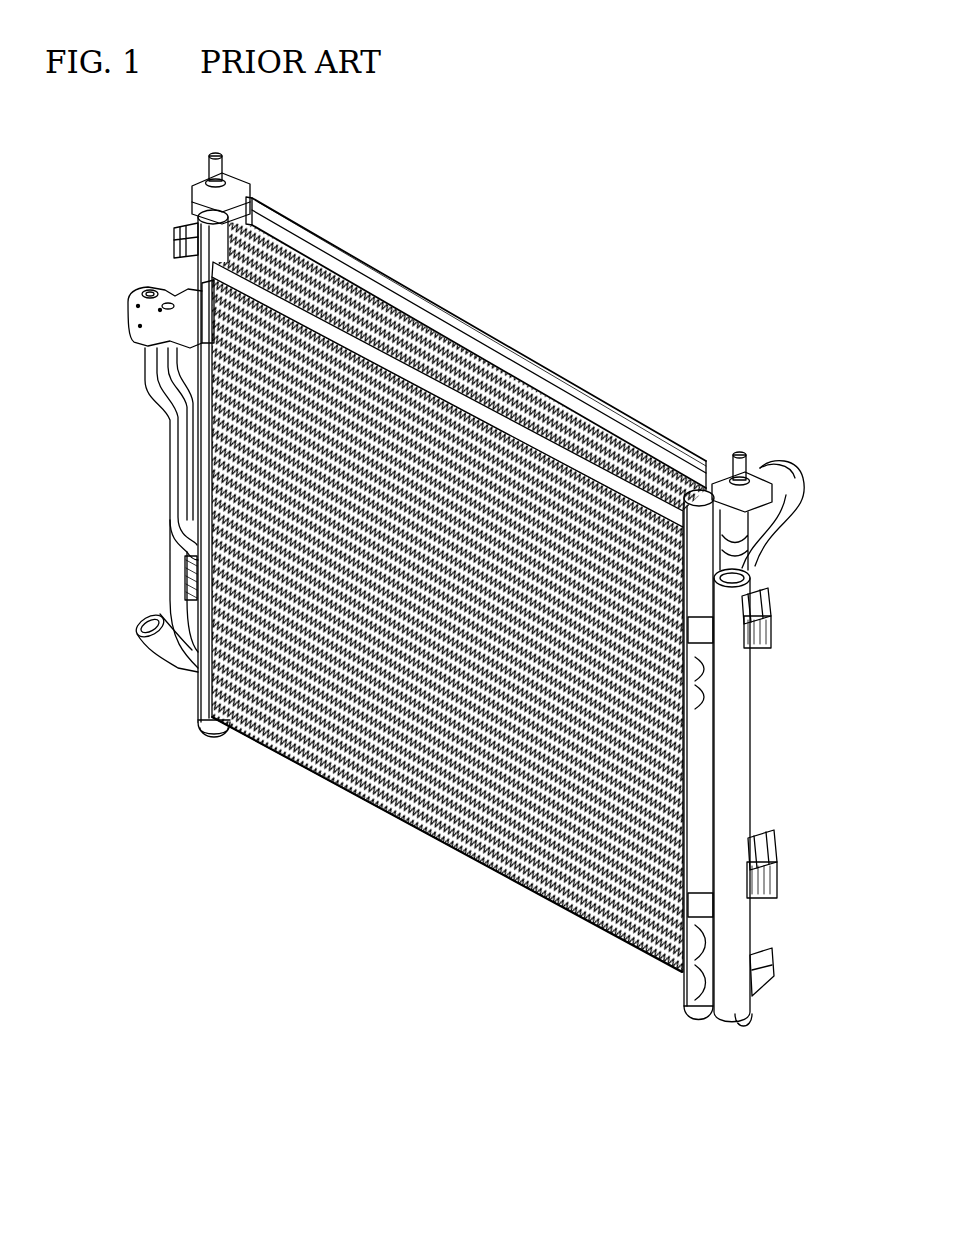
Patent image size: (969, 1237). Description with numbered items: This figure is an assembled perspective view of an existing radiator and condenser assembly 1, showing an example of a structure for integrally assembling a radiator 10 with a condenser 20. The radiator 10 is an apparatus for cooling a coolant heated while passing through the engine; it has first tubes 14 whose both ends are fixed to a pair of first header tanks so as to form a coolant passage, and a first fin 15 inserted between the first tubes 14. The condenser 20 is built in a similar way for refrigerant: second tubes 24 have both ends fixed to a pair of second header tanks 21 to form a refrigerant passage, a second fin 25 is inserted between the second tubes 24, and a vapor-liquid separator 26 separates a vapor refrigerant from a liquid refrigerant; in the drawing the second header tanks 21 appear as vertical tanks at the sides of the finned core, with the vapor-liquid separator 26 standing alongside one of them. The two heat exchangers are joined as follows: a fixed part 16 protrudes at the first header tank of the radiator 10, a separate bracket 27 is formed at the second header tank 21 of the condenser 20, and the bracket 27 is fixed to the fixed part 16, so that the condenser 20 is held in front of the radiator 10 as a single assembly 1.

The radiator and condenser assembly 1 is at (522, 299).
The radiator 10 is at (341, 246).
The first tubes 14 is at (556, 381).
The first fin 15 is at (600, 404).
The fixed part 16 is at (776, 598).
The condenser 20 is at (511, 893).
The second header tanks 21 is at (217, 742).
The second tubes 24 is at (424, 832).
The second fin 25 is at (372, 801).
The vapor-liquid separator 26 is at (749, 772).
The bracket 27 is at (776, 632).